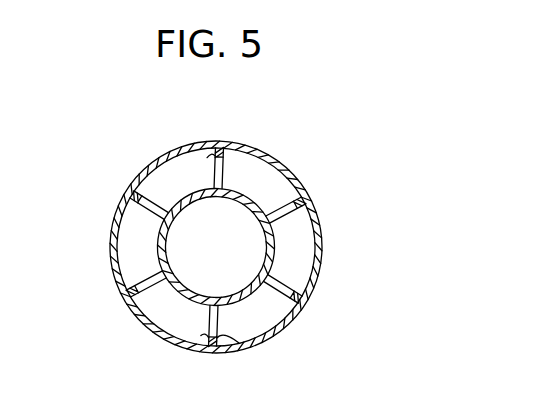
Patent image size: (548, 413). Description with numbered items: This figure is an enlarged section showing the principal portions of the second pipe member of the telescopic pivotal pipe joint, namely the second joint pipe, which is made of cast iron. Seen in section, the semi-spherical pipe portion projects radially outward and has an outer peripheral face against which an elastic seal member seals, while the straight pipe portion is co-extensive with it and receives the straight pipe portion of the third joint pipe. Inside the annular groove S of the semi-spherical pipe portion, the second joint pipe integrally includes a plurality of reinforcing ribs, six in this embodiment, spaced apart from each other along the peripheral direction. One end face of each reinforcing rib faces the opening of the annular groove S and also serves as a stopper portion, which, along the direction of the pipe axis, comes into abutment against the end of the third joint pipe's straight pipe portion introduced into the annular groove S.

The annular groove S is at (141, 251).